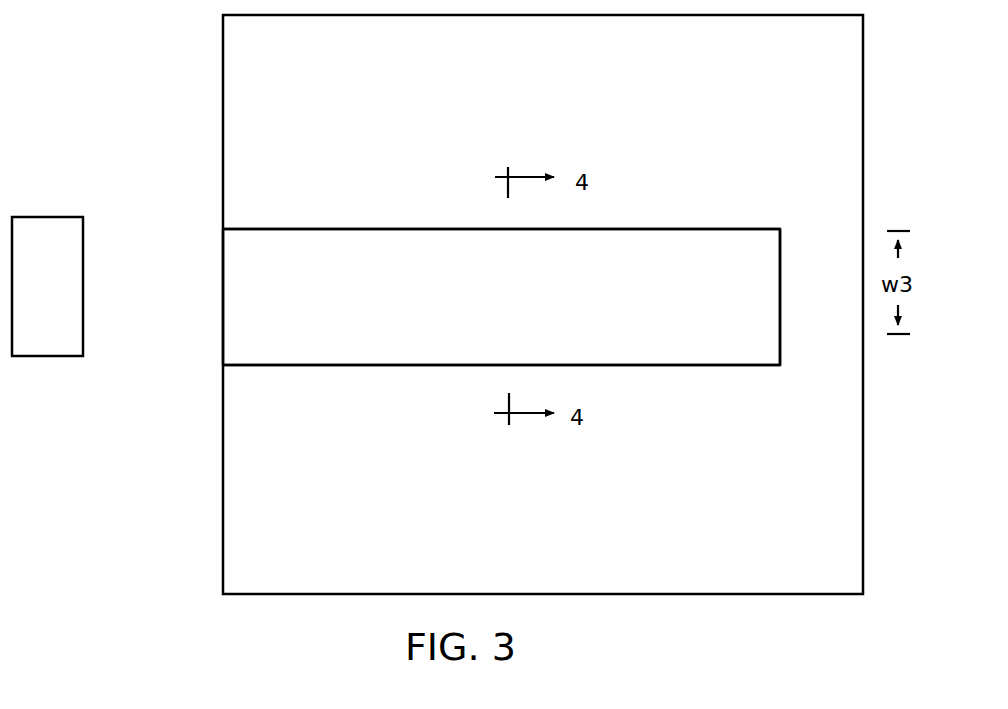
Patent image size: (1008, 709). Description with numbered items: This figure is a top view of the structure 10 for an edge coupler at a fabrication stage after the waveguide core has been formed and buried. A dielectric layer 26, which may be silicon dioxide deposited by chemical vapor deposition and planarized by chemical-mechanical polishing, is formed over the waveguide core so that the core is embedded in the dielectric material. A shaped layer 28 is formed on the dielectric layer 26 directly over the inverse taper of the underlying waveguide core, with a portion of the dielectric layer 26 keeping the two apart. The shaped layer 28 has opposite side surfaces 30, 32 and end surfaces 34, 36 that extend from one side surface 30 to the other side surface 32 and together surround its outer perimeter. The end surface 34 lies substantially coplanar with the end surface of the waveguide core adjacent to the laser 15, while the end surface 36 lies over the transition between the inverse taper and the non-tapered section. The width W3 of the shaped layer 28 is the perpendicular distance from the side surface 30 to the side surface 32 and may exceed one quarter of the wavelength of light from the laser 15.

The structure 10 is at (156, 86).
The laser 15 is at (56, 237).
The dielectric layer 26 is at (382, 559).
The shaped layer 28 is at (487, 250).
The side surface 30 is at (390, 229).
The side surface 32 is at (399, 366).
The end surface 34 is at (222, 278).
The end surface 36 is at (781, 285).